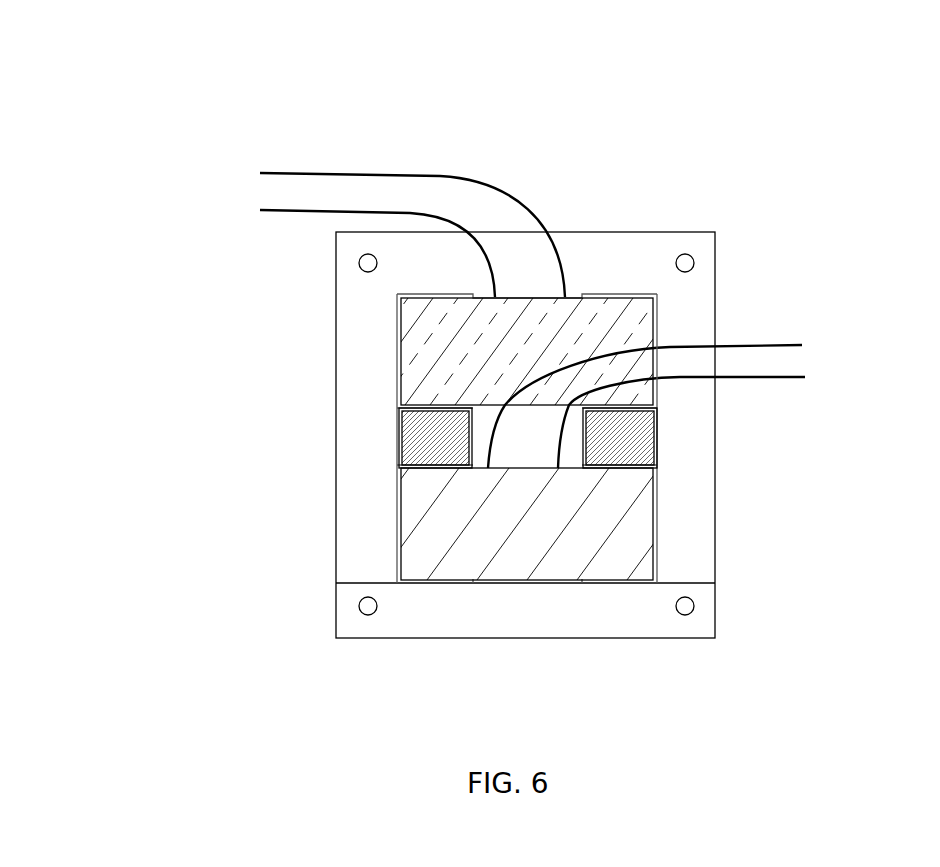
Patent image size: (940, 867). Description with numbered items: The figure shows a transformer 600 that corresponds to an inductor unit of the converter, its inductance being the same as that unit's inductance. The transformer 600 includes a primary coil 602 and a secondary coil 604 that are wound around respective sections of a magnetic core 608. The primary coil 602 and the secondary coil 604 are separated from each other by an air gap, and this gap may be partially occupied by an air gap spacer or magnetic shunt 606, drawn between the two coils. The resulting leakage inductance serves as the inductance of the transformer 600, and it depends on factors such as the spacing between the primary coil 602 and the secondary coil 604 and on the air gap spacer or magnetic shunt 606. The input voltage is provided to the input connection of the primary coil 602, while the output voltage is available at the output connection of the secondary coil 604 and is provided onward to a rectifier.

The transformer 600 is at (118, 86).
The primary coil 602 is at (422, 362).
The secondary coil 604 is at (418, 518).
The air gap spacer or magnetic shunt 606 is at (418, 439).
The magnetic core 608 is at (423, 596).